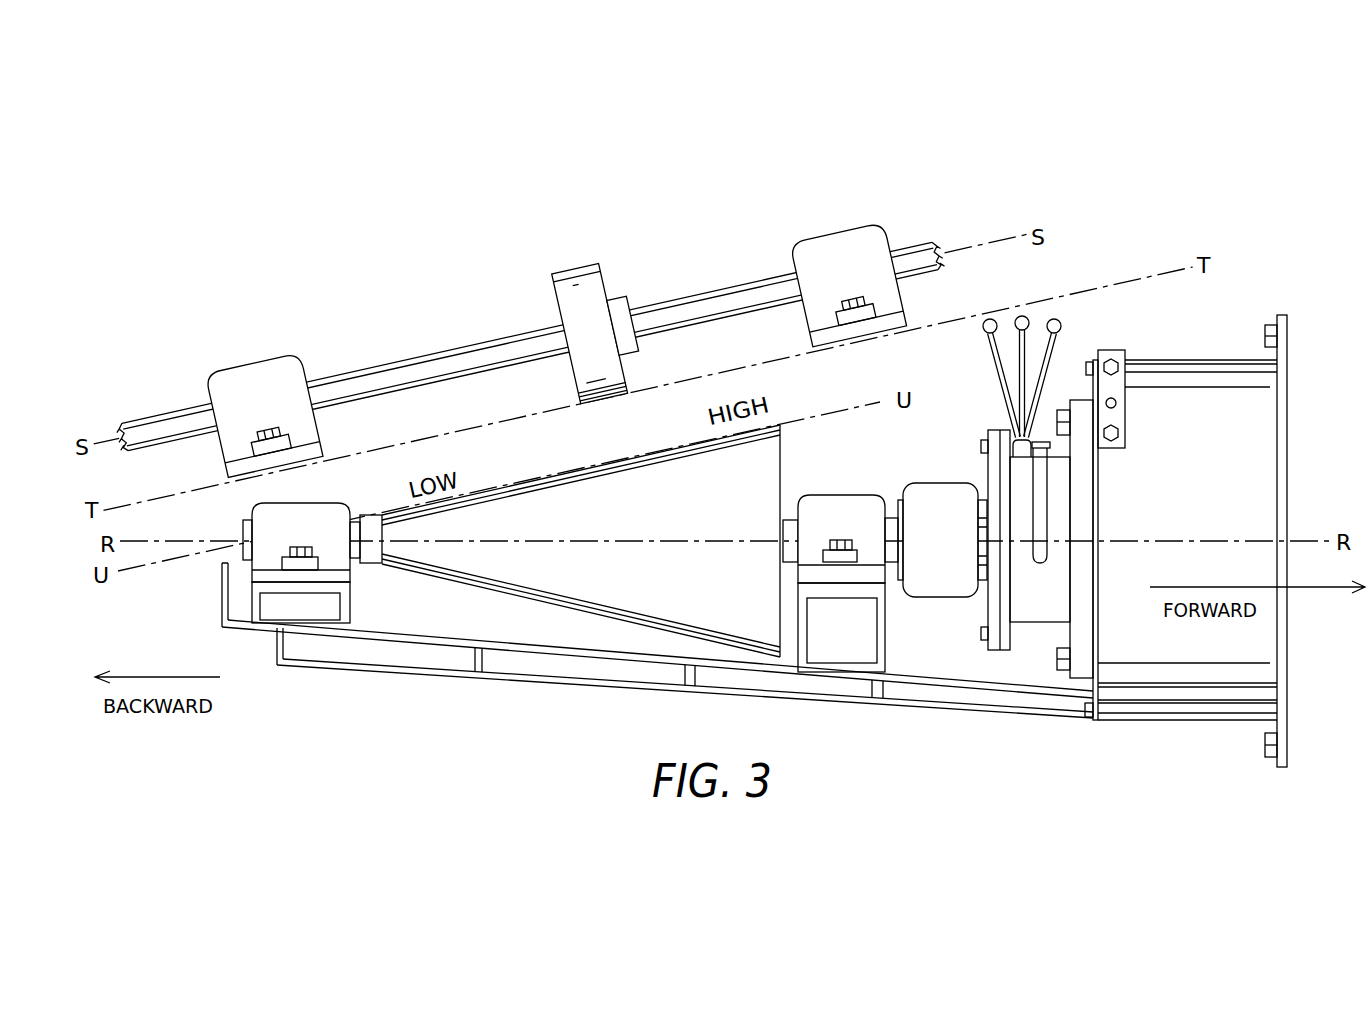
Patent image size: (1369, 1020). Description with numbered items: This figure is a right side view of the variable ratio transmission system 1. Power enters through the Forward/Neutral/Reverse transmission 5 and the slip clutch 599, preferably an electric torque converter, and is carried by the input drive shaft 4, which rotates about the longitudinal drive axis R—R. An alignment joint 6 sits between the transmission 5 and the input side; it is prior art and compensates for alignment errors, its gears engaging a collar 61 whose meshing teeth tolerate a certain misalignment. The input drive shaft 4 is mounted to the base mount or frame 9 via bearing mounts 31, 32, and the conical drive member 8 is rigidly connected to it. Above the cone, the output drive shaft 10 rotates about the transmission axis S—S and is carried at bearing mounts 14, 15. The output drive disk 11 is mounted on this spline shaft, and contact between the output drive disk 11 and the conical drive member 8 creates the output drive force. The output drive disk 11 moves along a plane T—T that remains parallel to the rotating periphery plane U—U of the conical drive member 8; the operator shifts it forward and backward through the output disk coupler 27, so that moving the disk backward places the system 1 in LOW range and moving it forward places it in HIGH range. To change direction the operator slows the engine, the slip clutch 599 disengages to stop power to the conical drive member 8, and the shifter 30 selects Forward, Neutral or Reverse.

The system 1 is at (1034, 172).
The input drive shaft 4 is at (790, 527).
The Forward/Neutral/Reverse transmission 5 is at (1032, 612).
The alignment joint 6 is at (943, 583).
The conical drive member 8 is at (630, 583).
The base mount 9 is at (453, 657).
The output drive shaft 10 is at (452, 363).
The output drive disk 11 is at (560, 277).
The bearing mount 14 is at (238, 385).
The bearing mount 15 is at (842, 253).
The output disk coupler 27 is at (612, 300).
The shifter 30 is at (1057, 347).
The bearing mount 31 is at (307, 515).
The bearing mount 32 is at (830, 503).
The collar 61 is at (368, 567).
The slip clutch 599 is at (1165, 380).